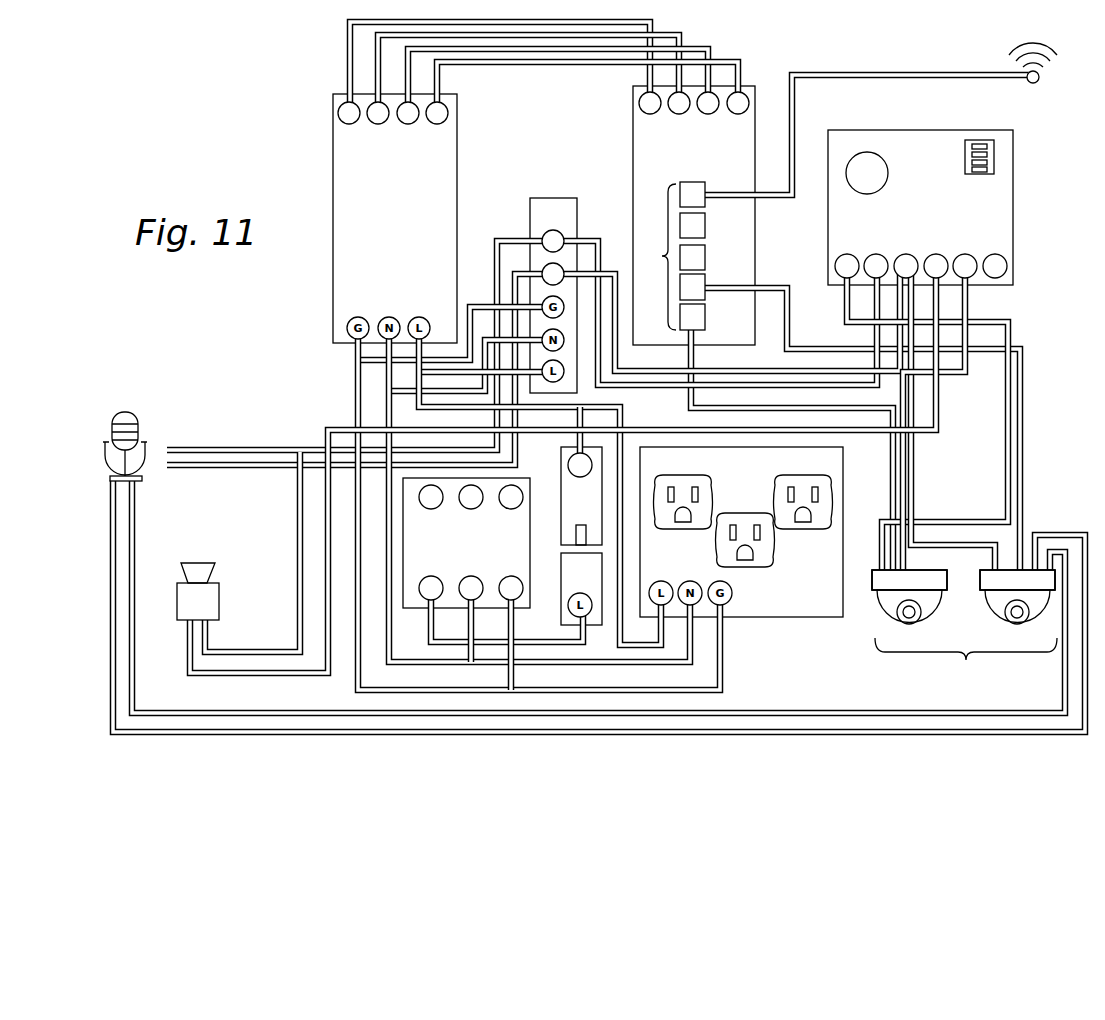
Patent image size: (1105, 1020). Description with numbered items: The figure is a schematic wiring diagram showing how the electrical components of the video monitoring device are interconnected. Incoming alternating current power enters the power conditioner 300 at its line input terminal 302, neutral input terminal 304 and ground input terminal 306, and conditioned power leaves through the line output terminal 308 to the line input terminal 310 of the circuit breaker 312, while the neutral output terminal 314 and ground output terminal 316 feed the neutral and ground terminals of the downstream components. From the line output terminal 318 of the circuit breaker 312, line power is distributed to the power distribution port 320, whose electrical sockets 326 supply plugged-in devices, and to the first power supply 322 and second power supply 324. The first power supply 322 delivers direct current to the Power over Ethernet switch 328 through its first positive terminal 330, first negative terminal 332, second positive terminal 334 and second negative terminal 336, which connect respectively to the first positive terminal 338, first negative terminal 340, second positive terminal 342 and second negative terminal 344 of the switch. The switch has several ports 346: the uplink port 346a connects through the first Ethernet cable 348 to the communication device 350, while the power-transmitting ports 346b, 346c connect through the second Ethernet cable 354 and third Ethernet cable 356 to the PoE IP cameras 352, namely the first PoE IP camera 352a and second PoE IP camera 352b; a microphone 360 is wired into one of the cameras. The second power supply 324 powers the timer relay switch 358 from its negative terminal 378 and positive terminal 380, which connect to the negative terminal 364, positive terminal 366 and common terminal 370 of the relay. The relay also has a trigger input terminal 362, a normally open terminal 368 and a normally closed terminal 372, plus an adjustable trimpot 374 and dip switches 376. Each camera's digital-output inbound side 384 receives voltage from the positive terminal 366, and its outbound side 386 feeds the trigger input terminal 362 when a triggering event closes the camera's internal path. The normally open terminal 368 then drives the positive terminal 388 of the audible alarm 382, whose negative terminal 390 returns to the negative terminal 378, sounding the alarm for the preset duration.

The power conditioner 300 is at (466, 543).
The line input terminal 302 is at (428, 509).
The neutral input terminal 304 is at (468, 509).
The ground input terminal 306 is at (512, 509).
The line output terminal 308 is at (422, 598).
The line input terminal 310 is at (581, 589).
The circuit breaker 312 is at (581, 496).
The neutral output terminal 314 is at (460, 580).
The ground output terminal 316 is at (524, 592).
The line output terminal 318 is at (567, 462).
The power distribution port 320 is at (741, 532).
The first power supply 322 is at (395, 218).
The second power supply 324 is at (553, 295).
The electrical sockets 326 is at (745, 512).
The Power over Ethernet switch 328 is at (694, 215).
The first positive terminal 330 is at (337, 120).
The first negative terminal 332 is at (415, 122).
The second positive terminal 334 is at (370, 122).
The second negative terminal 336 is at (448, 116).
The first positive terminal 338 is at (640, 108).
The first negative terminal 340 is at (715, 112).
The second positive terminal 342 is at (672, 112).
The second negative terminal 344 is at (749, 107).
The ports 346 is at (653, 257).
The uplink port 346a is at (708, 190).
The power-transmitting port 346b is at (708, 280).
The power-transmitting port 346c is at (708, 318).
The first Ethernet cable 348 is at (903, 72).
The communication device 350 is at (1008, 46).
The PoE internet protocol cameras 352 is at (964, 629).
The first PoE IP camera 352a is at (993, 626).
The second PoE IP camera 352b is at (938, 626).
The second Ethernet cable 354 is at (1022, 420).
The third Ethernet cable 356 is at (892, 480).
The timer relay switch 358 is at (920, 207).
The microphone 360 is at (132, 413).
The trigger input terminal 362 is at (836, 260).
The negative terminal 364 is at (869, 256).
The positive terminal 366 is at (900, 254).
The normally open terminal 368 is at (938, 254).
The common terminal 370 is at (970, 254).
The normally closed terminal 372 is at (1007, 262).
The adjustable trimpot 374 is at (867, 173).
The dip switches 376 is at (995, 165).
The negative terminal 378 is at (565, 240).
The positive terminal 380 is at (542, 272).
The audible alarm 382 is at (222, 585).
The inbound side 384 is at (1008, 568).
The outbound side 386 is at (877, 568).
The positive terminal 388 is at (180, 630).
The negative terminal 390 is at (212, 630).